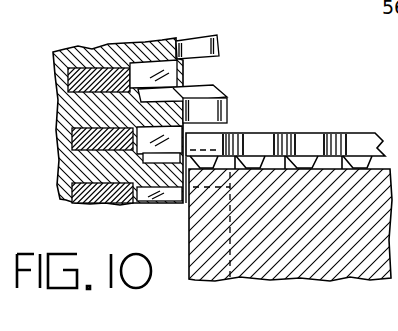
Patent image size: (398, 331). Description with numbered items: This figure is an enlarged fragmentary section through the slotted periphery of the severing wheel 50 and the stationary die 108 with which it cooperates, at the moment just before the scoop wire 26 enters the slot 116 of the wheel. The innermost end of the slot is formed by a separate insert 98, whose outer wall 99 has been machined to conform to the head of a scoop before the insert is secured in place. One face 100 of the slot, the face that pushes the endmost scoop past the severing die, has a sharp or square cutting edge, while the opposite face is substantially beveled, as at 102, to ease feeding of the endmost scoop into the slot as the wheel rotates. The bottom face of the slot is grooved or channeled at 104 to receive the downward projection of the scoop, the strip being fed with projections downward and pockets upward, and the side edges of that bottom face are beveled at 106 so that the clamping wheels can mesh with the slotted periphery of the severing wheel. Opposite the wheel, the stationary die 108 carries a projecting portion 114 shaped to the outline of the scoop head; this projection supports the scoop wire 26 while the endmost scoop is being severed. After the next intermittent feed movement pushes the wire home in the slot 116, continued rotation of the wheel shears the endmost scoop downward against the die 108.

The housing body 50 is at (52, 62).
The insert 98 is at (77, 72).
The outer wall 99 is at (132, 68).
The face of the slot 100 is at (210, 60).
The beveled face 102 is at (217, 88).
The beveled side edges 106 is at (192, 97).
The circuit board 26 is at (315, 133).
The slot 116 is at (132, 183).
The groove 104 is at (158, 157).
The projecting portion 114 is at (190, 213).
The die 108 is at (312, 263).